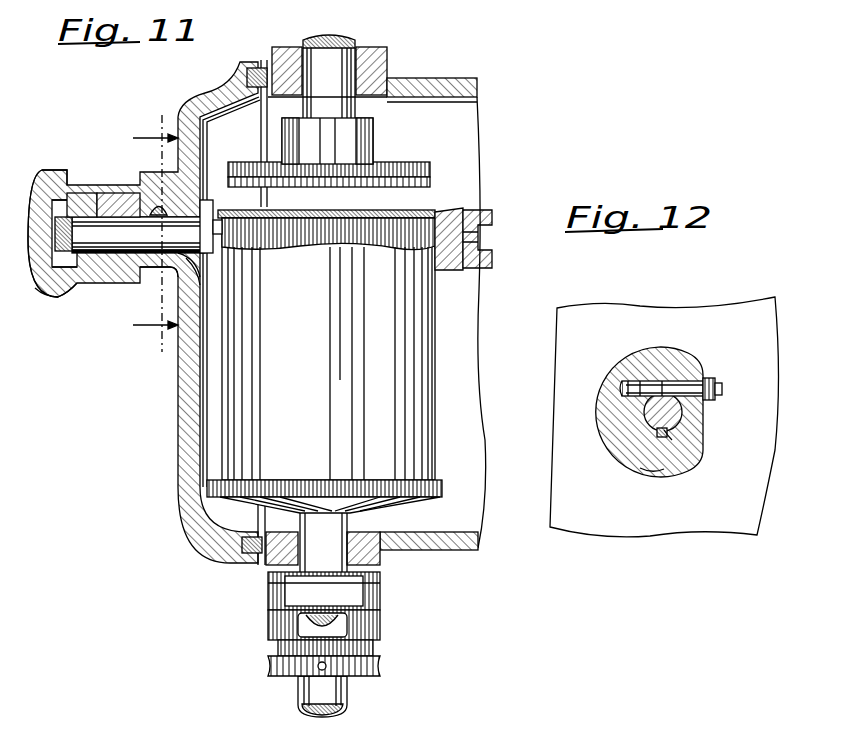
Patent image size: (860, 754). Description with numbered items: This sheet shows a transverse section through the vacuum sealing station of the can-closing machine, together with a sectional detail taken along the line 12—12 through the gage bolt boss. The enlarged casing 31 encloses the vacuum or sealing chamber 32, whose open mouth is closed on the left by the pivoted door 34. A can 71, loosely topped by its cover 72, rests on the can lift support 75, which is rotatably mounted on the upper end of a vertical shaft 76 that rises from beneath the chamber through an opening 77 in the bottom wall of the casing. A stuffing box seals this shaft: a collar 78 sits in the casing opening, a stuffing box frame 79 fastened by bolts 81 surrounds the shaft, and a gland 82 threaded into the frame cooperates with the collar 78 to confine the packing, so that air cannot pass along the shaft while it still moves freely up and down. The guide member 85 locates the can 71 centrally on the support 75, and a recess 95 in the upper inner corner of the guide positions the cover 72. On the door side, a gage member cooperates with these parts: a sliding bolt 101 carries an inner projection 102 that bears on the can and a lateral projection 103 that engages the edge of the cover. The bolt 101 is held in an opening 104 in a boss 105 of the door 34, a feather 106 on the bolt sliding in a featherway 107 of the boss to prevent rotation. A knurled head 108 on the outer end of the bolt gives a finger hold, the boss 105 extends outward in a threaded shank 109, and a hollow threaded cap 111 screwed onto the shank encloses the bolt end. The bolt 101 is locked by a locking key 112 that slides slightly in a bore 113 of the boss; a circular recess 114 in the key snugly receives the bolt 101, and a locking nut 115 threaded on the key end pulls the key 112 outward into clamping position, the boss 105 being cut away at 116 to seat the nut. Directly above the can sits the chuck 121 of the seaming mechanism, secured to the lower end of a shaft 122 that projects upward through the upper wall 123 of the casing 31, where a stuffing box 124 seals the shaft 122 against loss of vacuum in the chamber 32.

In FIG. 11, the section line 12— 12 is at (136, 233).
In FIG. 11, the enlarged casing portion 31 is at (462, 548).
In FIG. 11, the vacuum or sealing chamber 32 is at (205, 388).
In FIG. 11, the door 34 is at (178, 440).
In FIG. 11, the can 71 is at (339, 349).
In FIG. 11, the cover 72 is at (417, 212).
In FIG. 11, the can lift support 75 is at (443, 497).
In FIG. 11, the shaft 76 is at (345, 562).
In FIG. 11, the opening 77 is at (280, 568).
In FIG. 11, the collar 78 is at (348, 532).
In FIG. 11, the stuffing box frame 79 is at (380, 602).
In FIG. 11, the bolts 81 is at (305, 627).
In FIG. 11, the gland 82 is at (372, 665).
In FIG. 11, the guide member 85 is at (478, 232).
In FIG. 11, the recess 95 is at (448, 213).
In FIG. 11, the sliding bolt 101 is at (130, 235).
In FIG. 12, the sliding bolt 101 is at (655, 410).
In FIG. 11, the inner projection 102 is at (253, 251).
In FIG. 11, the lateral projection 103 is at (207, 200).
In FIG. 11, the opening 104 is at (133, 200).
In FIG. 11, the boss 105 is at (140, 288).
In FIG. 12, the boss 105 is at (652, 472).
In FIG. 11, the feather 106 is at (200, 280).
In FIG. 12, the feather 106 is at (668, 438).
In FIG. 11, the featherway 107 is at (200, 258).
In FIG. 12, the featherway 107 is at (645, 436).
In FIG. 11, the knurled head 108 is at (48, 200).
In FIG. 11, the threaded shank 109 is at (92, 195).
In FIG. 11, the hollow threaded cap 111 is at (42, 283).
In FIG. 11, the locking key 112 is at (158, 202).
In FIG. 12, the locking key 112 is at (690, 381).
In FIG. 12, the bore 113 is at (642, 383).
In FIG. 12, the circular recess 114 is at (662, 383).
In FIG. 12, the locking nut 115 is at (716, 380).
In FIG. 12, the cut-away seat 116 is at (716, 436).
In FIG. 11, the chuck 121 is at (410, 167).
In FIG. 11, the shaft 122 is at (343, 52).
In FIG. 11, the upper wall 123 is at (464, 84).
In FIG. 11, the stuffing box 124 is at (366, 58).